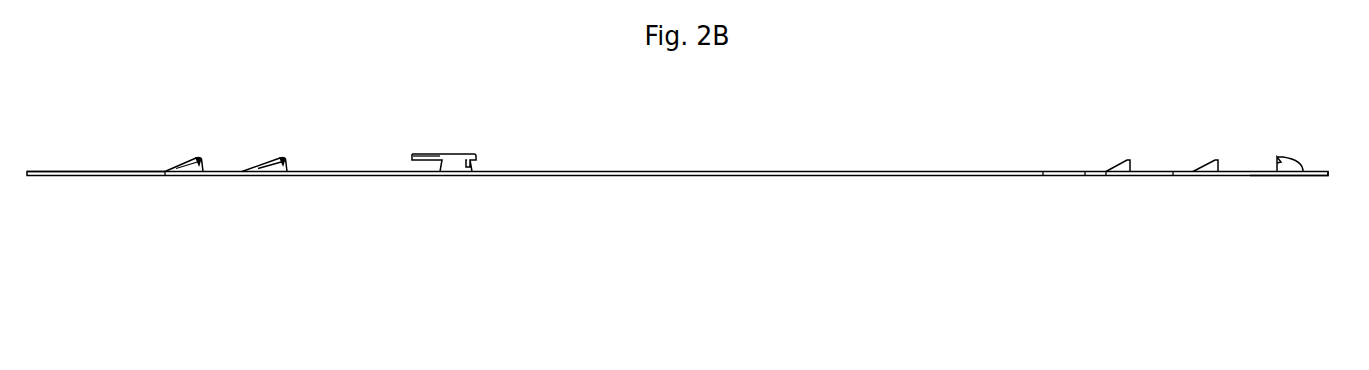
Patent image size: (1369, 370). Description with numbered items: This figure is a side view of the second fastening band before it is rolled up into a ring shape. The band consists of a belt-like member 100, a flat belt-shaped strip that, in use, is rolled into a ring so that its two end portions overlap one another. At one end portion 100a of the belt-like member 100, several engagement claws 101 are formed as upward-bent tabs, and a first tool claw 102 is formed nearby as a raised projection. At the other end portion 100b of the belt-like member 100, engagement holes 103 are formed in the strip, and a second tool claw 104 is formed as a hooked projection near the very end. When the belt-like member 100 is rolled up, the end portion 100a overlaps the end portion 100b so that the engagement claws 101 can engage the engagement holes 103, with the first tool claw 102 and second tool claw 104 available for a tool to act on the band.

The belt-like member 100 is at (720, 176).
The one end portion of the belt-like member 100a is at (228, 172).
The other end portion of the belt-like member 100b is at (1277, 176).
The engagement claws 101 is at (187, 162).
The first tool claw 102 is at (457, 154).
The engagement holes 103 is at (1148, 171).
The second tool claw 104 is at (1290, 158).